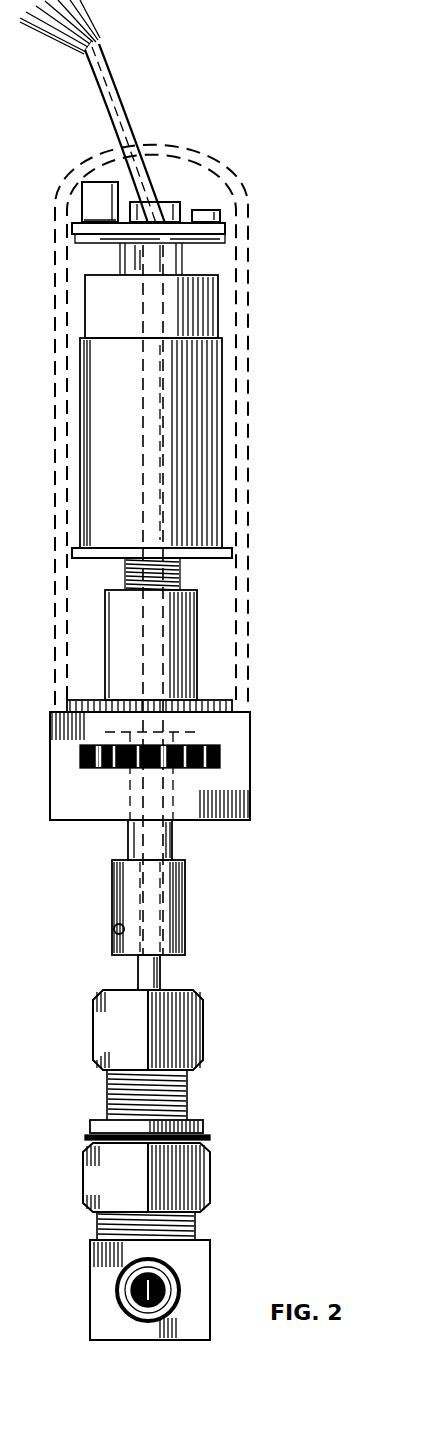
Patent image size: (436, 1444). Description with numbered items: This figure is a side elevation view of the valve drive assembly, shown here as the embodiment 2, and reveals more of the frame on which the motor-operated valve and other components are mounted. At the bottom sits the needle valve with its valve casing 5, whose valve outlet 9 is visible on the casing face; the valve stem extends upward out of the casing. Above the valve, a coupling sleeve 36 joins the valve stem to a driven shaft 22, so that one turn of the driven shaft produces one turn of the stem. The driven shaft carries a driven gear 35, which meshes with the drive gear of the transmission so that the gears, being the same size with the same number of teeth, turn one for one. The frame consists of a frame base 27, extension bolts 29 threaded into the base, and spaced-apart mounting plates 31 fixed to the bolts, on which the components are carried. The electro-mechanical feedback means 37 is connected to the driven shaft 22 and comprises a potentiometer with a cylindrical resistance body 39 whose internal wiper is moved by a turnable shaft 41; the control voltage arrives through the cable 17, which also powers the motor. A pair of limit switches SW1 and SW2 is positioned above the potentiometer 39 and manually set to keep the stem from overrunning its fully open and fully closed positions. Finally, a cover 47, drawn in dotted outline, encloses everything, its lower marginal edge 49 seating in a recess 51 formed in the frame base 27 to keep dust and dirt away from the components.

The level sensing apparatus 2 is at (4, 112).
The valve casing 5 is at (112, 1332).
The valve outlet 9 is at (116, 1290).
The cable 17 is at (124, 87).
The driven shaft 22 is at (153, 839).
The frame base 27 is at (125, 766).
The extension bolts 29 is at (118, 427).
The mounting plates 31 is at (124, 425).
The driven gear 35 is at (218, 757).
The coupling sleeve 36 is at (168, 930).
The electro-mechanical feedback means 37 is at (265, 310).
The resistance body 39 is at (208, 400).
The turnable shaft 41 is at (160, 452).
The cover 47 is at (63, 197).
The lower marginal edge 49 is at (81, 600).
The recess 51 is at (238, 732).
The limit switch SW1 is at (102, 184).
The limit switch SW2 is at (206, 212).